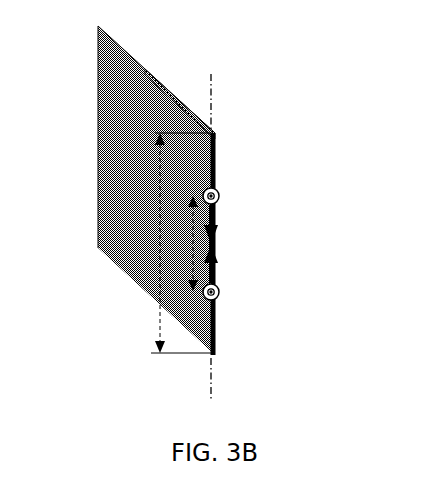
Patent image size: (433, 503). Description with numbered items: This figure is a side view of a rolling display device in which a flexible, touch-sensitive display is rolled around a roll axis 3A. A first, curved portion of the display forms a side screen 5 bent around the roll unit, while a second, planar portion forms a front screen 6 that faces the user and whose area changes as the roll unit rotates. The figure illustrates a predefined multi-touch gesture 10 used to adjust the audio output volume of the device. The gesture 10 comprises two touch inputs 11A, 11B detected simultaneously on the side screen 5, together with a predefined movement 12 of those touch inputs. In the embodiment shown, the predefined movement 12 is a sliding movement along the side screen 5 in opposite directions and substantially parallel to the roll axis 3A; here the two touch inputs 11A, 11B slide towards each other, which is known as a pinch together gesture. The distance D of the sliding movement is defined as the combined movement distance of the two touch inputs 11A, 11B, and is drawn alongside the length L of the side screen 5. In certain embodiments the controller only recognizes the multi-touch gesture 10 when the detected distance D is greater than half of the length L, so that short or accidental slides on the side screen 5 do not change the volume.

The side screen 5 is at (208, 126).
The front screen 6 is at (119, 158).
The predefined multi-touch gesture 10 is at (233, 148).
The touch input 11A is at (211, 181).
The touch input 11B is at (210, 281).
The predefined movement 12 is at (210, 203).
The roll axis 3A is at (212, 225).
The length of the side screen L is at (176, 243).
The distance of the sliding movement D is at (185, 243).